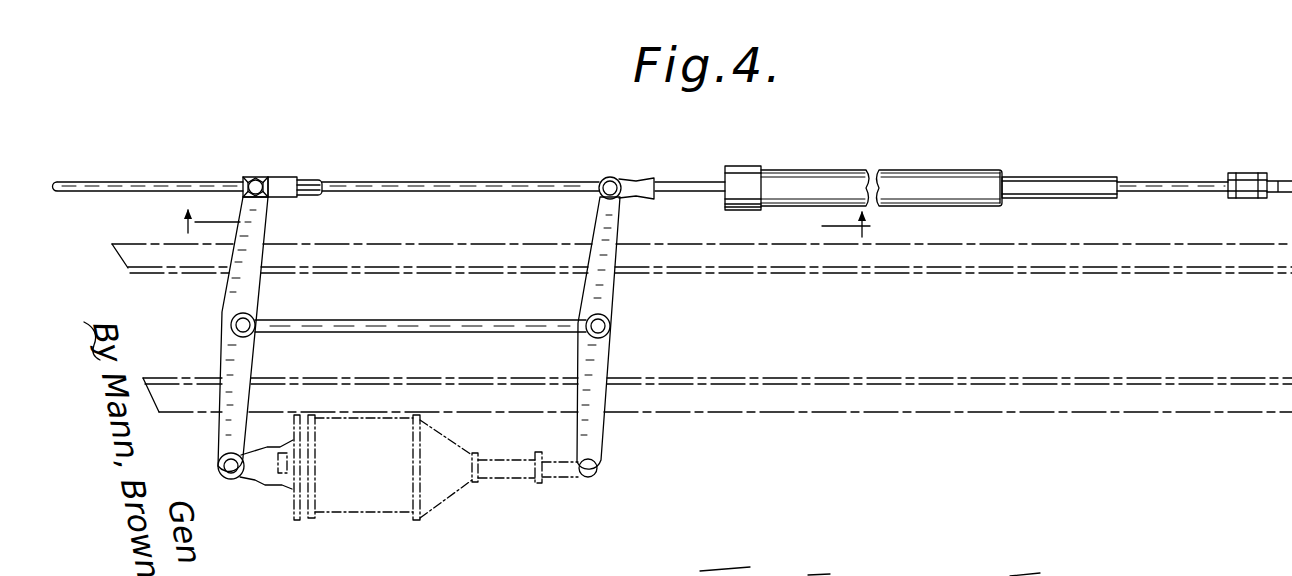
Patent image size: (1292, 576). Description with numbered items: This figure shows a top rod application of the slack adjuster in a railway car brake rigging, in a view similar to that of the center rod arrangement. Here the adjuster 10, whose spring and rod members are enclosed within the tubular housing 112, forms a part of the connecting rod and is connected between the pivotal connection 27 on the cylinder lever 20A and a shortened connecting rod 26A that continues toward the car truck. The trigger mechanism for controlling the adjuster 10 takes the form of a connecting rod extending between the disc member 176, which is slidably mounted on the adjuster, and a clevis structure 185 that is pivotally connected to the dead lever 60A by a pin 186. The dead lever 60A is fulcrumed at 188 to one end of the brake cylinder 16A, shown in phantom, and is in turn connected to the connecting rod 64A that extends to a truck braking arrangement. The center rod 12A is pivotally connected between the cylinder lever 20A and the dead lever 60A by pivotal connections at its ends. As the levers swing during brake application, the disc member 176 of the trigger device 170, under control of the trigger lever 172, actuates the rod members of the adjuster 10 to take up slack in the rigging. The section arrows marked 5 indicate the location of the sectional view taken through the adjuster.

The connecting rod 64A is at (168, 182).
The pin 186 is at (256, 180).
The clevis structure 185 is at (295, 176).
The dead lever 60A is at (270, 223).
The pivotal connection 27 is at (625, 178).
The disc member 176 is at (743, 164).
The tubular housing 112 is at (828, 170).
The adjuster 10 is at (954, 168).
The shortened connecting rod 26A is at (1287, 178).
The section line 5- 5 is at (528, 226).
The trigger lever 172 is at (249, 321).
The center rod 12A is at (435, 322).
The trigger device 170 is at (612, 325).
The cylinder lever 20A is at (608, 362).
The fulcrum 188 is at (236, 480).
The brake cylinder 16A is at (360, 503).